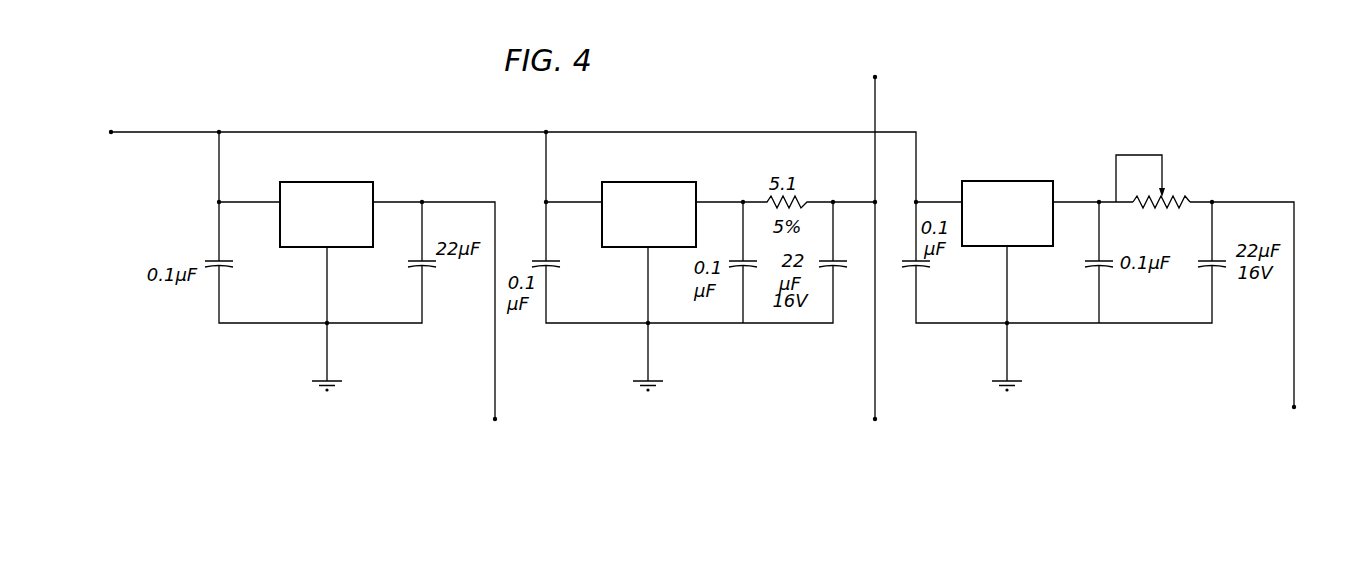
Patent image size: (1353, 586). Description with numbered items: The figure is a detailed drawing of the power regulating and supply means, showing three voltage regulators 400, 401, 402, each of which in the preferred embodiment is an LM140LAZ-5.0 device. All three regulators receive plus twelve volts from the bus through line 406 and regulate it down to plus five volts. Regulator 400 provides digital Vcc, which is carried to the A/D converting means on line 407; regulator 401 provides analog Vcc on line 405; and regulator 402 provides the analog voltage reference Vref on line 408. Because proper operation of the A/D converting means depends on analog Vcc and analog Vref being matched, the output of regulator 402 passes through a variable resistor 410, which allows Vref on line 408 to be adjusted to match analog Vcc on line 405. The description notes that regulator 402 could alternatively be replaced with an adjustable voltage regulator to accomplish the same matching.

The voltage regulator 400 is at (297, 249).
The voltage regulator 401 is at (622, 249).
The voltage regulator 402 is at (987, 248).
The line 405 is at (875, 155).
The line 406 is at (272, 131).
The line 407 is at (494, 373).
The line 408 is at (1294, 358).
The variable resistor 410 is at (1171, 164).